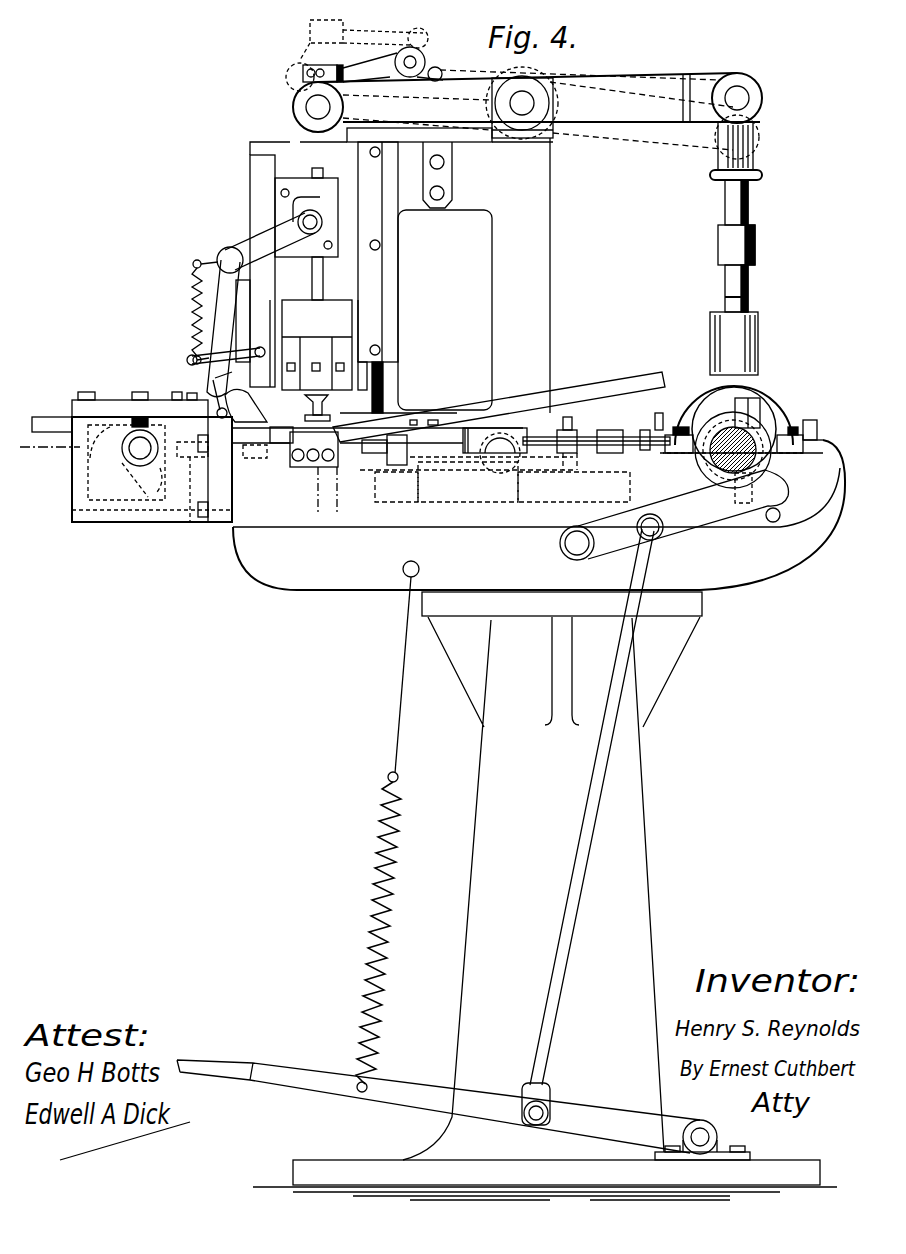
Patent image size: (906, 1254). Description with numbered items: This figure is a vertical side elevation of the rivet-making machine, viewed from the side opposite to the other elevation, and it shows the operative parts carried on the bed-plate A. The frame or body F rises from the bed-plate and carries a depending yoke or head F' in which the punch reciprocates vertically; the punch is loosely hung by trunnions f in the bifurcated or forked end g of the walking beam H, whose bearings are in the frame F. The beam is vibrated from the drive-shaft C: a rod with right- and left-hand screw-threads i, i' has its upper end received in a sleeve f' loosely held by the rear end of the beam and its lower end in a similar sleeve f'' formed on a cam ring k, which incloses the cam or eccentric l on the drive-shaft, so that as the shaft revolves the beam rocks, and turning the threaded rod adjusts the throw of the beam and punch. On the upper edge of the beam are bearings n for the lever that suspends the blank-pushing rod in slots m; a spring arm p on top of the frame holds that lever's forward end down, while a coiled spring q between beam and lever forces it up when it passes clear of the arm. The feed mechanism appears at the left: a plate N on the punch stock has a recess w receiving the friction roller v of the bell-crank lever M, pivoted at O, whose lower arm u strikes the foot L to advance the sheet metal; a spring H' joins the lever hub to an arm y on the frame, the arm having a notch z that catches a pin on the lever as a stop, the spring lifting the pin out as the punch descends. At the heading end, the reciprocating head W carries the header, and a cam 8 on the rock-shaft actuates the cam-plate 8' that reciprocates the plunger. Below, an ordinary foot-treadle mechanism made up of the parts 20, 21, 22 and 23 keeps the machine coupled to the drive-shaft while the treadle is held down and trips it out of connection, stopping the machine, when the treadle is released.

The beam H is at (540, 100).
The bifurcated or forked end g is at (305, 104).
The trunnions f is at (294, 116).
The cam ring k is at (377, 66).
The coiled spring q is at (347, 67).
The slots m is at (306, 70).
The spring arm p is at (443, 72).
The bearings n is at (437, 67).
The sleeve f' is at (747, 147).
The screw-thread i' is at (753, 199).
The screw-thread i is at (494, 325).
The sleeve f'' is at (751, 343).
The cam or eccentric l is at (731, 447).
The shaft C is at (752, 432).
The frame or body F is at (446, 270).
The depending yoke or head F' is at (324, 264).
The plate N is at (300, 180).
The recess or opening w is at (306, 209).
The friction roller v is at (318, 218).
The bell-crank lever M is at (250, 248).
The pivot O is at (218, 258).
The lower arm u is at (228, 328).
The spring H' is at (190, 308).
The arm y is at (195, 354).
The notch z is at (232, 350).
The neck a is at (323, 407).
The foot L is at (250, 400).
The pivot r' is at (211, 422).
The cam 8 is at (126, 457).
The reciprocating head or holder W is at (140, 442).
The cam-plate 8' is at (152, 532).
The bed-plate A is at (539, 515).
The treadle mechanism part 23 is at (712, 518).
The treadle mechanism part 22 is at (595, 819).
The treadle mechanism part 21 is at (389, 826).
The treadle mechanism part 20 is at (463, 1109).